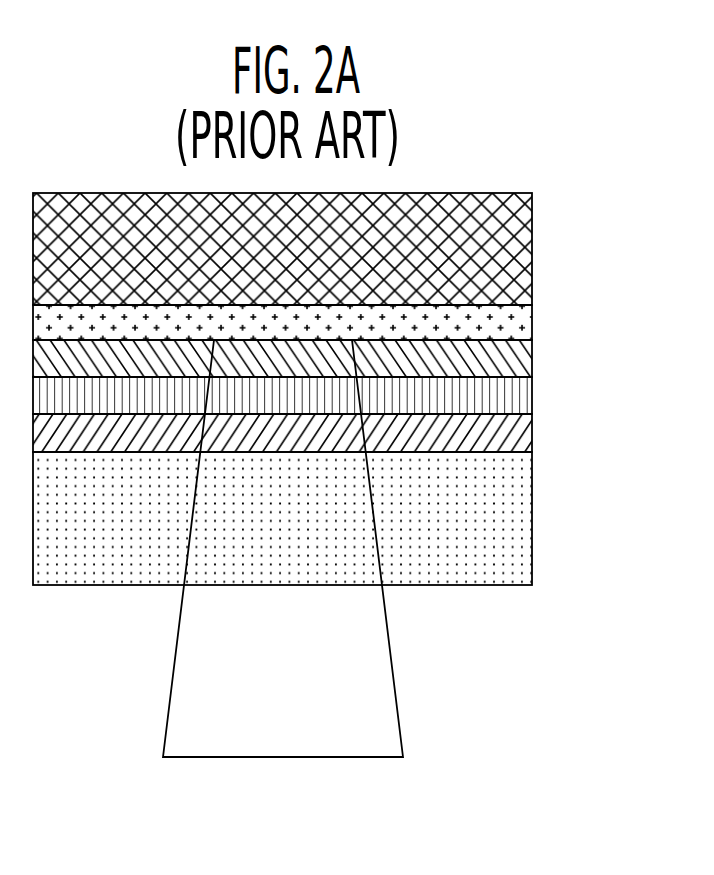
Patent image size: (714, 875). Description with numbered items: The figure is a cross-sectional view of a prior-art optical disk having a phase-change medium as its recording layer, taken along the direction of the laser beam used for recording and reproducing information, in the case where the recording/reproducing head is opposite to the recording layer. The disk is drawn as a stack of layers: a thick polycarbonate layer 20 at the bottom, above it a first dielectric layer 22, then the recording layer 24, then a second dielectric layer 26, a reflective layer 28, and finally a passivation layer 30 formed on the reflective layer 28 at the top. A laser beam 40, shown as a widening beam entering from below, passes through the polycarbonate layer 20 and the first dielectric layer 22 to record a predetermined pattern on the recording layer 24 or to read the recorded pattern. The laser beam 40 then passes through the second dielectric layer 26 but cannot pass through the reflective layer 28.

The polycarbonate layer 20 is at (515, 525).
The first dielectric layer 22 is at (515, 435).
The recording layer 24 is at (515, 393).
The second dielectric layer 26 is at (515, 355).
The reflective layer 28 is at (515, 319).
The passivation layer 30 is at (518, 242).
The laser beam 40 is at (375, 668).